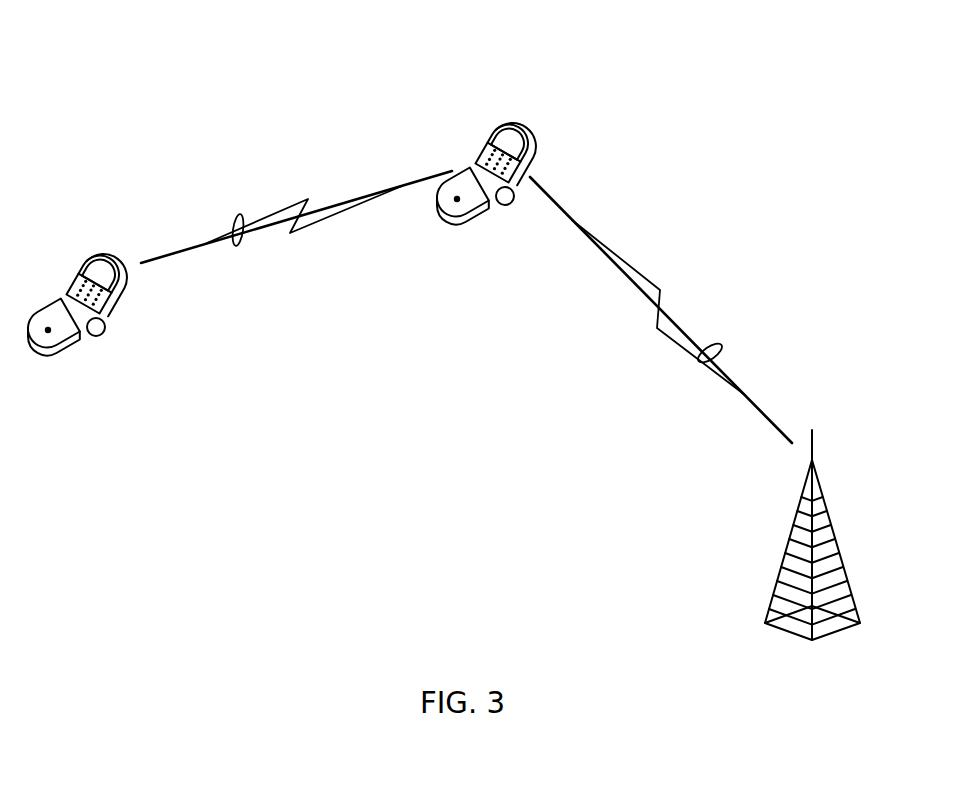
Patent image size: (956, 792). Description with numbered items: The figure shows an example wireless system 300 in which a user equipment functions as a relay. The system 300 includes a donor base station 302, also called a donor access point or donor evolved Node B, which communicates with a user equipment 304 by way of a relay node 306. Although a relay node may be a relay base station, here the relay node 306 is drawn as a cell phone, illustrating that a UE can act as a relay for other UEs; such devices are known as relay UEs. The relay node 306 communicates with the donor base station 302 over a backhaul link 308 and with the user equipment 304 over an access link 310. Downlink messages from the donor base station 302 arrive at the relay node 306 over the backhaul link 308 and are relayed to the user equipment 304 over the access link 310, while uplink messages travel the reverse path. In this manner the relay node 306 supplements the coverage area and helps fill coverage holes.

The wireless system 300 is at (159, 74).
The donor base station 302 is at (842, 548).
The user equipment 304 is at (72, 274).
The relay node 306 is at (511, 126).
The backhaul link 308 is at (702, 362).
The access link 310 is at (238, 246).